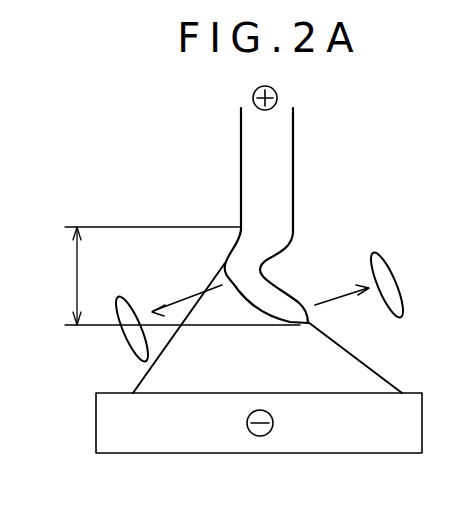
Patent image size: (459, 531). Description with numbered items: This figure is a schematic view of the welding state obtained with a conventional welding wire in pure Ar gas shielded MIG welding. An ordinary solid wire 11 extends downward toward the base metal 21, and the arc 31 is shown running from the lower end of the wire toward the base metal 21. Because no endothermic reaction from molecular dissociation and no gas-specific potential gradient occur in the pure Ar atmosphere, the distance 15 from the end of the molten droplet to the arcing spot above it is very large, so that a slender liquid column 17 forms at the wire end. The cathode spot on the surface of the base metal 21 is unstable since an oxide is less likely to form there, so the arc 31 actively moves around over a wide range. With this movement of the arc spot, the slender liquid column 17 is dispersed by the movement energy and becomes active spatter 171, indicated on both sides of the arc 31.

The solid wire 11 is at (228, 163).
The liquid column 17 is at (293, 298).
The distance 15 is at (77, 278).
The spatter 171 is at (130, 336).
The arc 31 is at (350, 364).
The base metal 21 is at (187, 437).